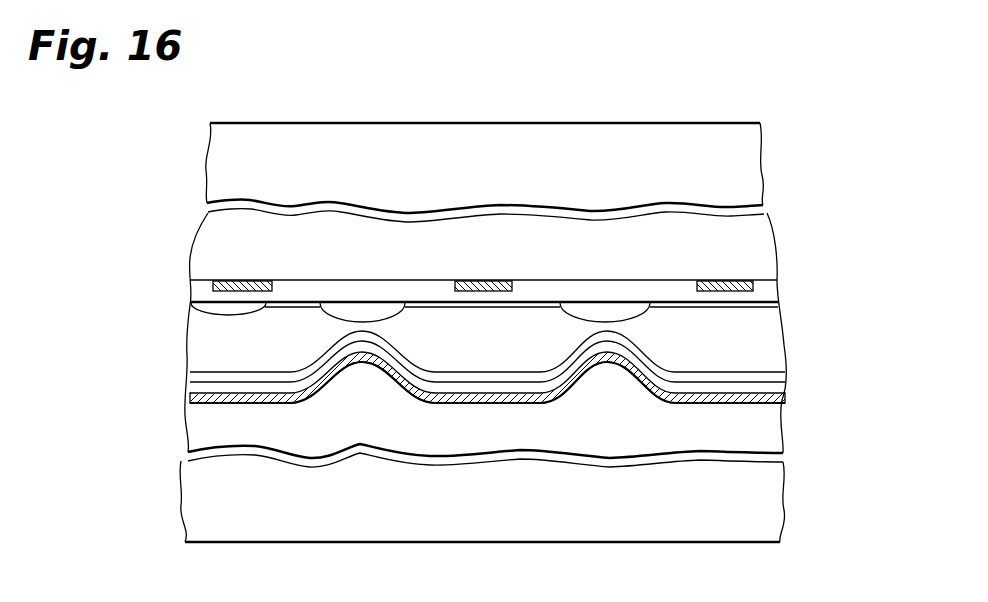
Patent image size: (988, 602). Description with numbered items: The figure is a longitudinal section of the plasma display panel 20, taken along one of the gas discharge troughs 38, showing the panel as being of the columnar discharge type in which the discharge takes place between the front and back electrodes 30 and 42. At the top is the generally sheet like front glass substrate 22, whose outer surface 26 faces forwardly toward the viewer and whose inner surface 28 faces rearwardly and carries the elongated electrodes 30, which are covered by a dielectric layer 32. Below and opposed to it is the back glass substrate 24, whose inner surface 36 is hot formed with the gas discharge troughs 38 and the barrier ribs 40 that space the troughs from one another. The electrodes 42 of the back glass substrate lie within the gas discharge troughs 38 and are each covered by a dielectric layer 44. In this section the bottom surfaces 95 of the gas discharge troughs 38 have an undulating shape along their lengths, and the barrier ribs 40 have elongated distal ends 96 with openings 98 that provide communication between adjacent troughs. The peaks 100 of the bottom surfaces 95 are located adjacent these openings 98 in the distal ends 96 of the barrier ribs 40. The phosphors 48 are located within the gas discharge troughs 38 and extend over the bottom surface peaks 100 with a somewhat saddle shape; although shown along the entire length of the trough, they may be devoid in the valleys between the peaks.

The plasma display panel 20 is at (157, 243).
The front glass substrate 22 is at (799, 182).
The back glass substrate 24 is at (799, 423).
The outer surface 26 is at (642, 106).
The inner surface 28 is at (715, 318).
The electrodes 30 is at (242, 283).
The dielectric layer 32 is at (193, 303).
The inner surface 36 is at (288, 293).
The gas discharge troughs 38 is at (760, 327).
The barrier ribs 40 is at (188, 337).
The electrodes 42 is at (425, 399).
The dielectric layer 44 is at (495, 389).
The phosphors 48 is at (397, 347).
The bottom surfaces 95 is at (217, 401).
The distal ends 96 is at (415, 313).
The openings 98 is at (342, 316).
The peaks 100 is at (363, 371).